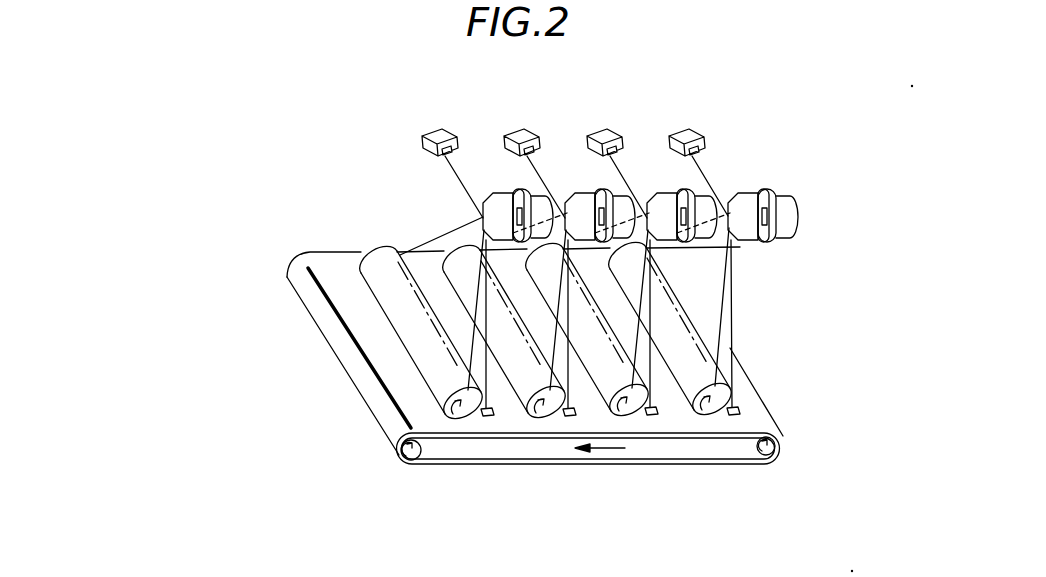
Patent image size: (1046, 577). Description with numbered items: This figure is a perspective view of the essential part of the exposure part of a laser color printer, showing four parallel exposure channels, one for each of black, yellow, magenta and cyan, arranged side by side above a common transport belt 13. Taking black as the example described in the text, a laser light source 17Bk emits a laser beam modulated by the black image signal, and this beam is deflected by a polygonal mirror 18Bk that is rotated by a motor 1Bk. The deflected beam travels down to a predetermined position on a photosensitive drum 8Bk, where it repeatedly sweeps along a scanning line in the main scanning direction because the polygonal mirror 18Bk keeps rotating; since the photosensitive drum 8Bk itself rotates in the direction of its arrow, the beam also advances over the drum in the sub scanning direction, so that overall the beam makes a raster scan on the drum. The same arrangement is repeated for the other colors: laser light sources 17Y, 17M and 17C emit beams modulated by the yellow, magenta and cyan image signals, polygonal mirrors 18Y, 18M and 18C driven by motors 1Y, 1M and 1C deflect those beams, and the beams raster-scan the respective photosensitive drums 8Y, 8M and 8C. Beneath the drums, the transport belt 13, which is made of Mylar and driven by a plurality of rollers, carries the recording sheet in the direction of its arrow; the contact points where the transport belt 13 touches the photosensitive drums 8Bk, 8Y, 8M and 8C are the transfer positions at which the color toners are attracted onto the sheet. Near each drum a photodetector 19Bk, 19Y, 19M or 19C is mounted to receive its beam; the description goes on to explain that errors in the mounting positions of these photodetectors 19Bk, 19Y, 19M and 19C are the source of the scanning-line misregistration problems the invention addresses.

The motor 1C is at (540, 197).
The motor 1M is at (622, 197).
The motor 1Y is at (704, 197).
The motor 1Bk is at (797, 204).
The photosensitive drum 8C is at (468, 416).
The photosensitive drum 8M is at (549, 415).
The photosensitive drum 8Y is at (630, 413).
The photosensitive drum 8Bk is at (712, 412).
The transport belt 13 is at (437, 469).
The laser light source 17C is at (441, 128).
The laser light source 17M is at (523, 128).
The laser light source 17Y is at (606, 128).
The laser light source 17Bk is at (688, 128).
The polygonal mirror 18C is at (510, 191).
The polygonal mirror 18M is at (592, 191).
The polygonal mirror 18Y is at (674, 191).
The polygonal mirror 18Bk is at (756, 191).
The photodetector 19C is at (489, 418).
The photodetector 19M is at (571, 418).
The photodetector 19Y is at (653, 417).
The photodetector 19Bk is at (736, 417).